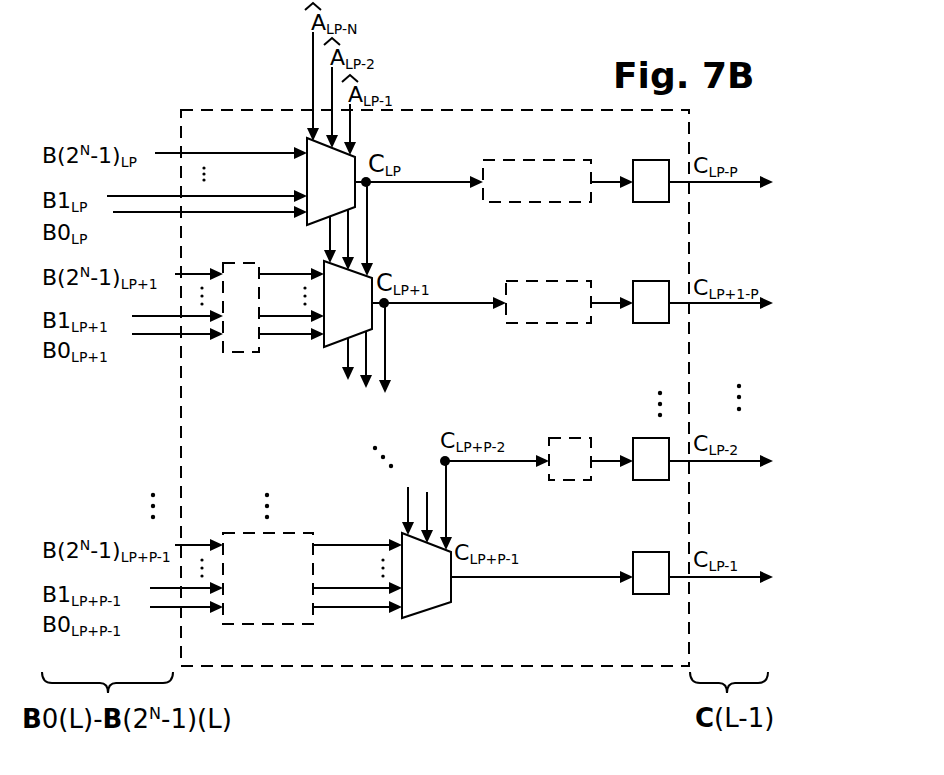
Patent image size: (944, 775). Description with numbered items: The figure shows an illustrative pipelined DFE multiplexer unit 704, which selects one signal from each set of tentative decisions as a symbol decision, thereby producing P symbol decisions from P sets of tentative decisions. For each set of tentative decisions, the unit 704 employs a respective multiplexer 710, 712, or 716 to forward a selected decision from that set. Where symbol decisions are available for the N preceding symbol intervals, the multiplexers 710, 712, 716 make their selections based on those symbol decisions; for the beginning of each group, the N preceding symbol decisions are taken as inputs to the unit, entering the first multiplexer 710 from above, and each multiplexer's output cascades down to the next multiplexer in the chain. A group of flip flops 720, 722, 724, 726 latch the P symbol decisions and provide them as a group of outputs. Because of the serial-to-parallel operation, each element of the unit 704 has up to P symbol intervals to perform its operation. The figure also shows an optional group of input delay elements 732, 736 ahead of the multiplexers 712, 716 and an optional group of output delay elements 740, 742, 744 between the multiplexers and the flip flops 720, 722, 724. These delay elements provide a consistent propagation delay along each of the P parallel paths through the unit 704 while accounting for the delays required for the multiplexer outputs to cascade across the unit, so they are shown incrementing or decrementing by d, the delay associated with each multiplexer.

The pipelined DFE multiplexer unit 704 is at (345, 668).
The multiplexer 710 is at (350, 195).
The multiplexer 712 is at (367, 317).
The multiplexer 716 is at (445, 590).
The flip flop 720 is at (663, 203).
The flip flop 722 is at (663, 324).
The flip flop 724 is at (663, 481).
The flip flop 726 is at (663, 596).
The input delay element 732 is at (251, 353).
The input delay element 736 is at (251, 625).
The output delay element 740 is at (538, 203).
The output delay element 742 is at (538, 324).
The output delay element 744 is at (585, 481).